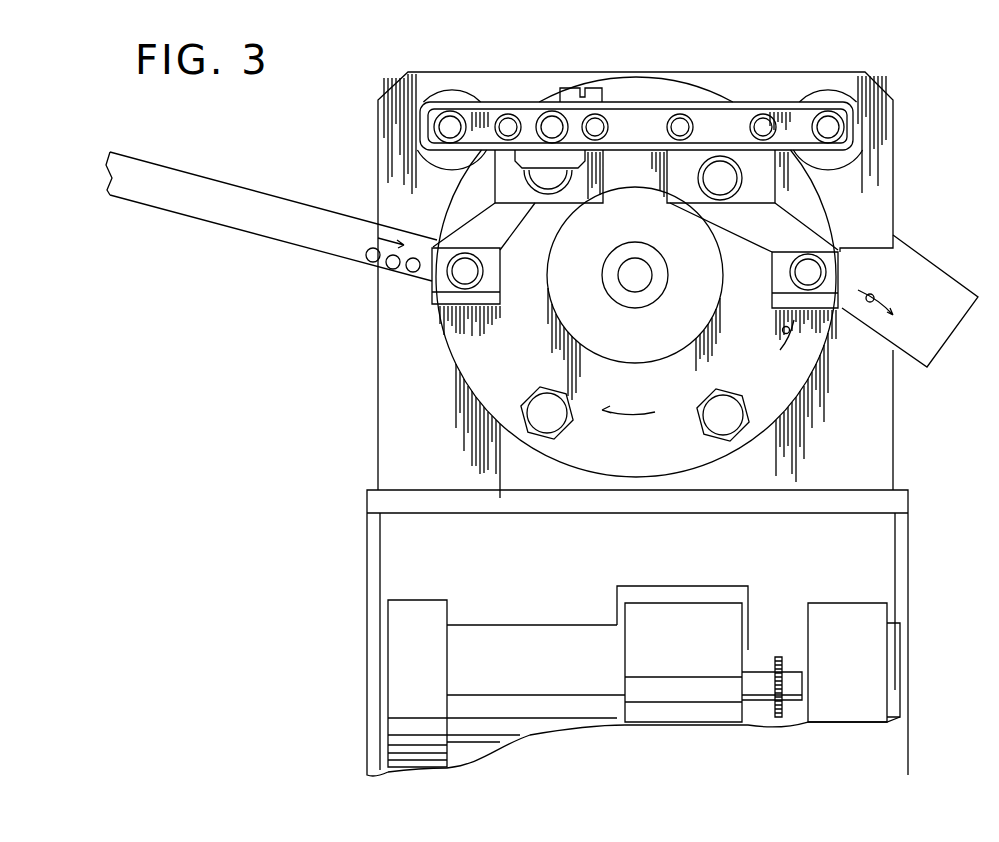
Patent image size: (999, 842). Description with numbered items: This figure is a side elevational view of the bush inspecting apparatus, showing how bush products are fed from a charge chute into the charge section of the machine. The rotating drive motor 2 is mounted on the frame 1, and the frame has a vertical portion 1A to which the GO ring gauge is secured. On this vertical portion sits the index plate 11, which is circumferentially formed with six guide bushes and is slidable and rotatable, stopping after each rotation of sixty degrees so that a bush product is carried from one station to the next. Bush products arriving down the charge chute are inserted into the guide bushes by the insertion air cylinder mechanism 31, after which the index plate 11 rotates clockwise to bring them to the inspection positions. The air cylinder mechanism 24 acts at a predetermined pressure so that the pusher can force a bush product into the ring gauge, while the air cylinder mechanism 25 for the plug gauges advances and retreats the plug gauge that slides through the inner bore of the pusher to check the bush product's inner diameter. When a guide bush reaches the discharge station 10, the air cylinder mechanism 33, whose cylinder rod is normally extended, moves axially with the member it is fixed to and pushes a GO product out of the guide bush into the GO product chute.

The frame 1 is at (367, 500).
The vertical portion of the frame 1A is at (378, 372).
The rotating drive motor 2 is at (440, 600).
The discharge station 10 is at (770, 270).
The index plate 11 is at (814, 360).
The air cylinder mechanism 24 is at (720, 175).
The air cylinder mechanism for the plug gauges 25 is at (552, 127).
The insertion air cylinder mechanism 31 is at (450, 277).
The air cylinder mechanism 33 is at (808, 268).